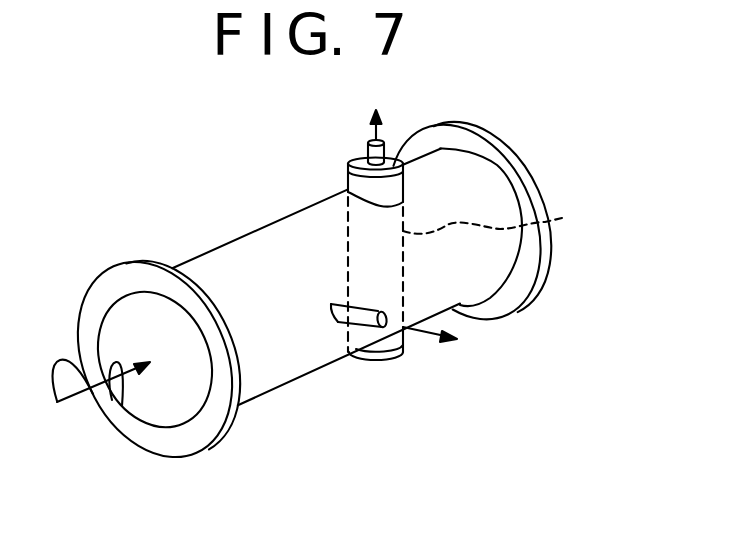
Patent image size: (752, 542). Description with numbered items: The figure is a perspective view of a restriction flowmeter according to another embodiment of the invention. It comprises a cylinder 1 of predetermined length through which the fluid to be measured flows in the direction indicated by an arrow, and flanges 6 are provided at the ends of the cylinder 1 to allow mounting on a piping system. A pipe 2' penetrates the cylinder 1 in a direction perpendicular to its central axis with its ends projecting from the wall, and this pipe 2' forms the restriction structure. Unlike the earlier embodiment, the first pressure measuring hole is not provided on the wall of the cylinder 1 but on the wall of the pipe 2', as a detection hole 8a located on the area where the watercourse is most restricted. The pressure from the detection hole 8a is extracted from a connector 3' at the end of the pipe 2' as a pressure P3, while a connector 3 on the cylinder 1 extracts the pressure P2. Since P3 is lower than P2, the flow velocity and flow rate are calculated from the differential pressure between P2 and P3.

The cylinder 1 is at (268, 249).
The pipe 2' is at (473, 207).
The connector 3 is at (367, 308).
The connector 3' is at (339, 173).
The flange 6 is at (102, 289).
The detection hole 8a is at (500, 219).
The pressure P2 is at (449, 339).
The pressure P3 is at (372, 109).